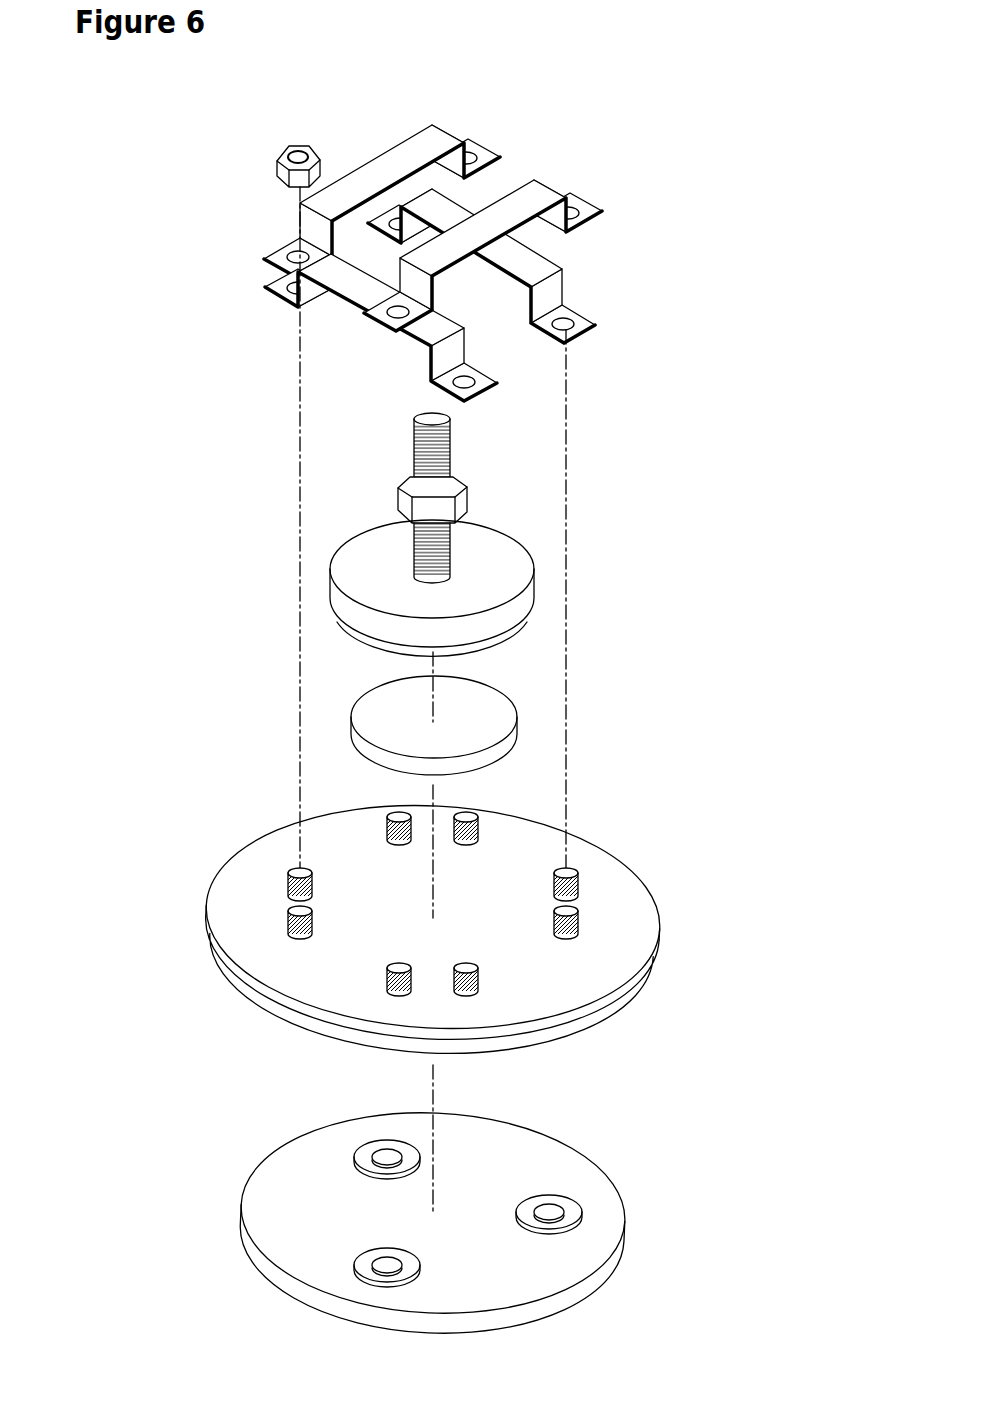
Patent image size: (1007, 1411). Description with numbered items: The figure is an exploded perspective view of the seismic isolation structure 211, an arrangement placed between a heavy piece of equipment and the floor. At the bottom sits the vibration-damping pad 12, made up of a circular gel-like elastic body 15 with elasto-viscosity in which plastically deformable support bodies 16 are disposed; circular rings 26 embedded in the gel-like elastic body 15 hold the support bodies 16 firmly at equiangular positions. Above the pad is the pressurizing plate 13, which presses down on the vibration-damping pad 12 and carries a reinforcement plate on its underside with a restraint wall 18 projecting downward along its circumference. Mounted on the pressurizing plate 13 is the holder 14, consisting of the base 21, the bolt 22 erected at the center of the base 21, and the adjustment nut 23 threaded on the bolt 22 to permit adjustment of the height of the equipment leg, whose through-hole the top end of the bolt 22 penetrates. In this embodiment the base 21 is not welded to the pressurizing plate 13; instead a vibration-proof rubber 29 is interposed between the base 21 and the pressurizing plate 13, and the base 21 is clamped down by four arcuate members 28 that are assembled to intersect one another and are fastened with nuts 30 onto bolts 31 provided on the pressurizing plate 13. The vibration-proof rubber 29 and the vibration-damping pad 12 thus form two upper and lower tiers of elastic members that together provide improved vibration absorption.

The vibration-damping pad 12 is at (242, 1207).
The pressurizing plate 13 is at (623, 897).
The holder 14 is at (488, 443).
The gel-like elastic body 15 is at (580, 1170).
The support body 16 is at (383, 1157).
The restraint wall 18 is at (517, 1037).
The base 21 is at (500, 553).
The bolt 22 is at (413, 434).
The adjustment nut 23 is at (400, 497).
The circular ring 26 is at (367, 1153).
The arcuate member 28 is at (433, 124).
The vibration-proof rubber 29 is at (498, 707).
The nut 30 is at (277, 166).
The bolt 31 is at (473, 963).
The seismic isolation structure 211 is at (201, 680).